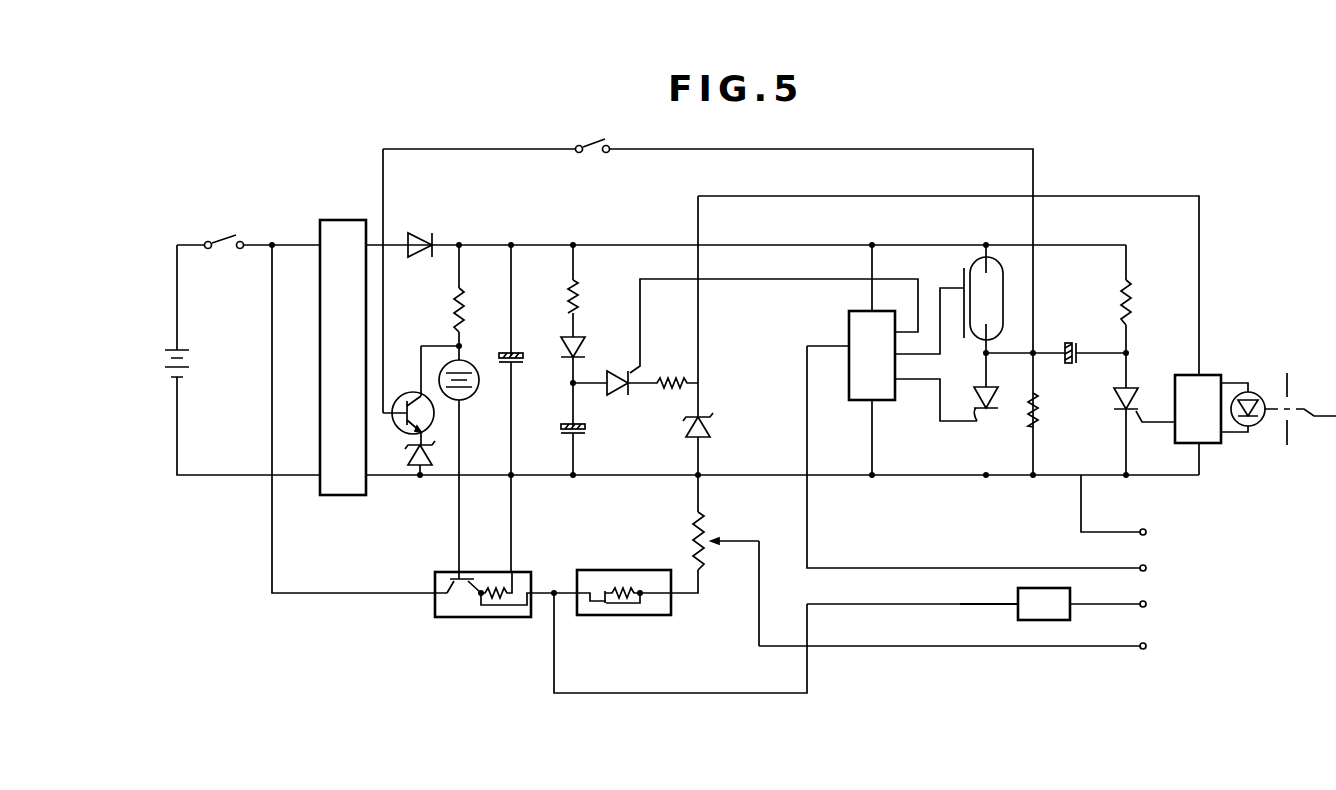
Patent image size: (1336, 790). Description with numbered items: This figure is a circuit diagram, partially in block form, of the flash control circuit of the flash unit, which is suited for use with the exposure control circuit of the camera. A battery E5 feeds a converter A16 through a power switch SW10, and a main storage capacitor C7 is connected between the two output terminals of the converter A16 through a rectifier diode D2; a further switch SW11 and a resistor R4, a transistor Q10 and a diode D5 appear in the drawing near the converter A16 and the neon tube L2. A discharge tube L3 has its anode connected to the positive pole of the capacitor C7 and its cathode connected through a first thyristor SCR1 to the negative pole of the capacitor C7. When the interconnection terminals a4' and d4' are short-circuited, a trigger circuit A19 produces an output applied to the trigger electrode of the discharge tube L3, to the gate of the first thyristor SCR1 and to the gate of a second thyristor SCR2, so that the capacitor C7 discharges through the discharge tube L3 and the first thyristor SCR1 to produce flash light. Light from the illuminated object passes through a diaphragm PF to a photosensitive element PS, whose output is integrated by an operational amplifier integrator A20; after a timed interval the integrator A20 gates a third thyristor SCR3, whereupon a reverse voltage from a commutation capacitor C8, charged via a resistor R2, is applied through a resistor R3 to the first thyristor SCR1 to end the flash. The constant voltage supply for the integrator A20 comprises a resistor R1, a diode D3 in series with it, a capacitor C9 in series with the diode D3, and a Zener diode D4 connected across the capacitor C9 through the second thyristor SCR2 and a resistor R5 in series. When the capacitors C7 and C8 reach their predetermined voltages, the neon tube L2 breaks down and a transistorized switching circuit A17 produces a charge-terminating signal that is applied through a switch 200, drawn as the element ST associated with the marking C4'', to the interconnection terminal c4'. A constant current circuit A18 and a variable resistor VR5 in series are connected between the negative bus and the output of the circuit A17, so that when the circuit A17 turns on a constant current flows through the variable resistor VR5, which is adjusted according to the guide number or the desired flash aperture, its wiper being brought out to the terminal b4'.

The power switch SW10 is at (230, 230).
The battery E5 is at (189, 366).
The converter A16 is at (343, 357).
The rectifier diode D2 is at (418, 234).
The resistor R4 is at (471, 310).
The transistor Q10 is at (408, 404).
The neon tube L2 is at (470, 380).
The zener diode D5 is at (431, 456).
The main storage capacitor C7 is at (522, 360).
The resistor R1 is at (586, 297).
The diode D3 is at (587, 350).
The capacitor C9 is at (586, 430).
The second thyristor SCR2 is at (632, 400).
The resistor R5 is at (663, 373).
The Zener diode D4 is at (709, 427).
The variable resistor VR5 is at (716, 516).
The transistorized switching circuit A17 is at (472, 617).
The constant current circuit A18 is at (620, 615).
The switch SW11 is at (601, 134).
The trigger circuit A19 is at (892, 354).
The discharge tube L3 is at (983, 322).
The first thyristor SCR1 is at (964, 426).
The resistor R3 is at (1045, 410).
The commutation capacitor C8 is at (1056, 342).
The resistor R2 is at (1140, 302).
The third thyristor SCR3 is at (1133, 384).
The operational amplifier integrator A20 is at (1198, 409).
The photosensitive element PS is at (1256, 434).
The diaphragm PF is at (1290, 434).
The interconnection terminal d4' is at (1158, 533).
The interconnection terminal a4' is at (1158, 569).
The start switch ST is at (973, 604).
The switch 200 is at (989, 592).
The terminal C4'' is at (989, 616).
The interconnection terminal c4' is at (1157, 605).
The terminal b4' is at (1158, 647).